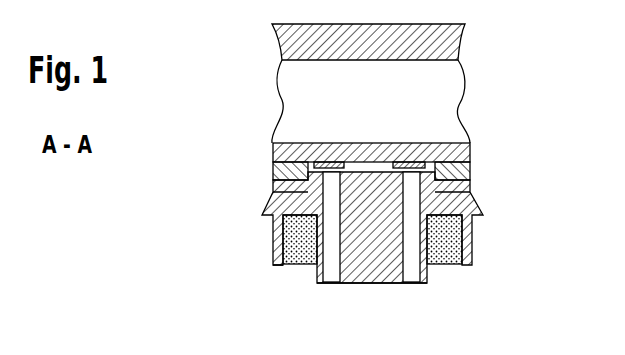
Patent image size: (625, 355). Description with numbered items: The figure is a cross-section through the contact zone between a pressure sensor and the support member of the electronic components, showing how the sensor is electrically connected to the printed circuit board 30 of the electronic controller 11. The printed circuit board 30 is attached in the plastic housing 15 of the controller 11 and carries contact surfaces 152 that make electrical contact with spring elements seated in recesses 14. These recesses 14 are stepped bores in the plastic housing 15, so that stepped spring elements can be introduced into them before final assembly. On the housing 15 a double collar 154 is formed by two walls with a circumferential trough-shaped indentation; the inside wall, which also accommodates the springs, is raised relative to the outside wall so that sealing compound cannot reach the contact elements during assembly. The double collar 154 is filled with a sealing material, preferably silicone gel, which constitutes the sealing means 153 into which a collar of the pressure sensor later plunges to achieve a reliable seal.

The electronic controller 11 is at (323, 92).
The printed circuit board 30 is at (405, 143).
The contact surfaces 152 is at (318, 162).
The recesses 14 is at (334, 181).
The plastic housing 15 is at (480, 205).
The sealing means 153 is at (295, 237).
The double collar 154 is at (318, 277).